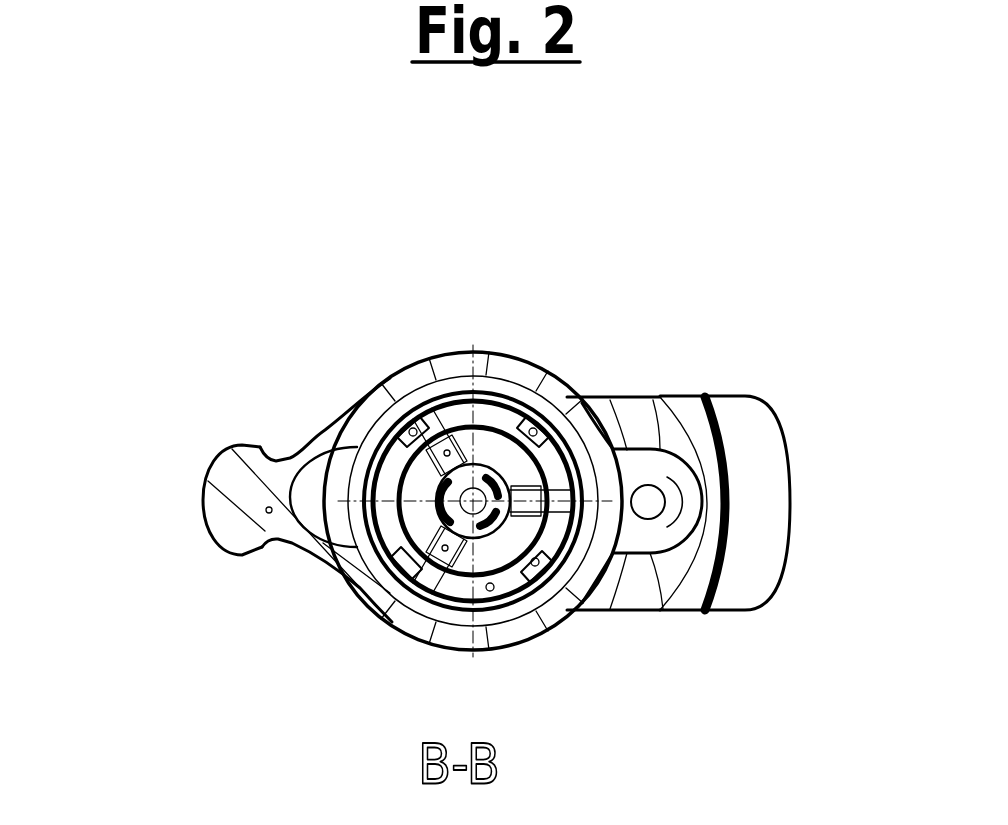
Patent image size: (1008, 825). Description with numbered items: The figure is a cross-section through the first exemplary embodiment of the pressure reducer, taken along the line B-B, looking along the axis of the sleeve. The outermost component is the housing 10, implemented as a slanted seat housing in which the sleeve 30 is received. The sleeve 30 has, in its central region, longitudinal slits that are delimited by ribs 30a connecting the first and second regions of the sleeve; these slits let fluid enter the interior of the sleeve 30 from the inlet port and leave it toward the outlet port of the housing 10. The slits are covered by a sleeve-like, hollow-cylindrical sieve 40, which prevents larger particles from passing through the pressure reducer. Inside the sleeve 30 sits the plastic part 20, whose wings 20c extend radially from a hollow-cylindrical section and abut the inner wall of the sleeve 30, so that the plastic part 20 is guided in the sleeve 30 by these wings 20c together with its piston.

The housing 10 is at (434, 500).
The plastic part 20 is at (425, 368).
The wings 20c is at (530, 470).
The sleeve 30 is at (490, 545).
The ribs 30a is at (477, 480).
The sieve 40 is at (515, 397).